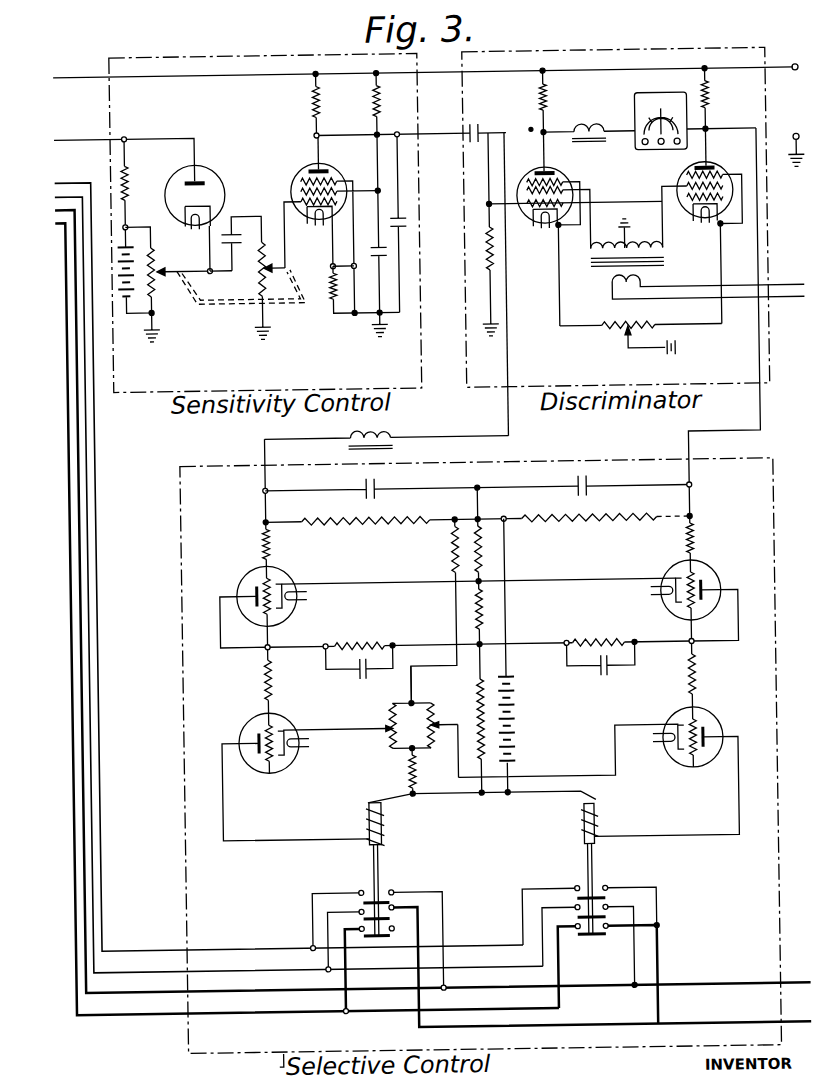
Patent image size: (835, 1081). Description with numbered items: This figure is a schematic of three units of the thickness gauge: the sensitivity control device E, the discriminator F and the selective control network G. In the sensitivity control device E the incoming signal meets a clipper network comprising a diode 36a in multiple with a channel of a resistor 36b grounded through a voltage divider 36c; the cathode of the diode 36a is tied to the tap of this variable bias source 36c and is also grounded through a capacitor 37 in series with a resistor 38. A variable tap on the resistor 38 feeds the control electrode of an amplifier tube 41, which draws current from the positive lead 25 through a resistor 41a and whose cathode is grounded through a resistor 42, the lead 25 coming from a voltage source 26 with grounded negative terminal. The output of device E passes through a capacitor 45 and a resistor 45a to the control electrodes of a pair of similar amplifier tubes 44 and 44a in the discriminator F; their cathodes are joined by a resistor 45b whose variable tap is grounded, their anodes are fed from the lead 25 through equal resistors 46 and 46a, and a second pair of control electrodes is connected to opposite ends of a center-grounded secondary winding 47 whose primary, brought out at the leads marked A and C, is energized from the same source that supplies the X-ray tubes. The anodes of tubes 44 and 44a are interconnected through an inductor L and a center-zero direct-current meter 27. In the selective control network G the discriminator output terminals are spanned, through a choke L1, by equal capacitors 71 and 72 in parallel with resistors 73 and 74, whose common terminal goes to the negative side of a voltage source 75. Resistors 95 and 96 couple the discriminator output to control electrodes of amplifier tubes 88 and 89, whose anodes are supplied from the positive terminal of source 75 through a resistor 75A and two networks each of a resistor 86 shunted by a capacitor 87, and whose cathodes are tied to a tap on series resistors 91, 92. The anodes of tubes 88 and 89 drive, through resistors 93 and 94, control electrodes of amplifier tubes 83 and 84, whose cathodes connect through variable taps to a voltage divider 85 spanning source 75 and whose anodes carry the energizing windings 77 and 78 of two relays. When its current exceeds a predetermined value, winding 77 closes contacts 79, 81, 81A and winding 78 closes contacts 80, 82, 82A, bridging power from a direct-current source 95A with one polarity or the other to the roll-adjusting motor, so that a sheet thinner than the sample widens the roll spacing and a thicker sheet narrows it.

The positive lead 25 is at (793, 70).
The second voltage source 26 is at (811, 129).
The direct-current meter 27 is at (657, 97).
The diode 36a is at (216, 173).
The resistor 36b is at (133, 180).
The voltage divider 36c is at (157, 266).
The capacitor 37 is at (246, 233).
The resistor 38 is at (262, 290).
The amplifier tube 41 is at (333, 173).
The resistor 41a is at (325, 102).
The resistor 42 is at (333, 284).
The amplifier tube 44 is at (565, 174).
The amplifier tube 44a is at (716, 168).
The capacitor 45 is at (481, 126).
The resistor 45a is at (490, 250).
The resistor 45b is at (641, 338).
The resistor 46 is at (553, 101).
The resistor 46a is at (715, 101).
The secondary winding 47 is at (639, 246).
The capacitor 71 is at (376, 479).
The capacitor 72 is at (588, 479).
The resistor 73 is at (380, 524).
The resistor 74 is at (604, 524).
The voltage source 75 is at (512, 706).
The resistor 75A is at (477, 701).
The relay winding 77 is at (380, 835).
The relay winding 78 is at (579, 824).
The contact 79 is at (389, 893).
The contact 80 is at (602, 892).
The contact 81 is at (568, 964).
The contact 81A is at (382, 970).
The contact 82 is at (589, 946).
The contact 82A is at (606, 939).
The amplifier tube 83 is at (284, 721).
The amplifier tube 84 is at (714, 721).
The voltage divider 85 is at (416, 770).
The resistor 86 is at (357, 638).
The capacitor 87 is at (361, 680).
The amplifier tube 88 is at (286, 579).
The amplifier tube 89 is at (710, 579).
The resistor 91 is at (483, 621).
The resistor 92 is at (481, 557).
The resistor 93 is at (262, 685).
The resistor 94 is at (697, 675).
The resistor 95 is at (262, 548).
The resistor 96 is at (697, 540).
The direct-current source 95A is at (800, 1030).
The inductor L is at (598, 132).
The choke L1 is at (386, 436).
The X-ray tube A is at (811, 285).
The terminal C is at (812, 298).
The sensitivity control device E is at (130, 389).
The discriminator F is at (482, 390).
The selective control network G is at (181, 1040).